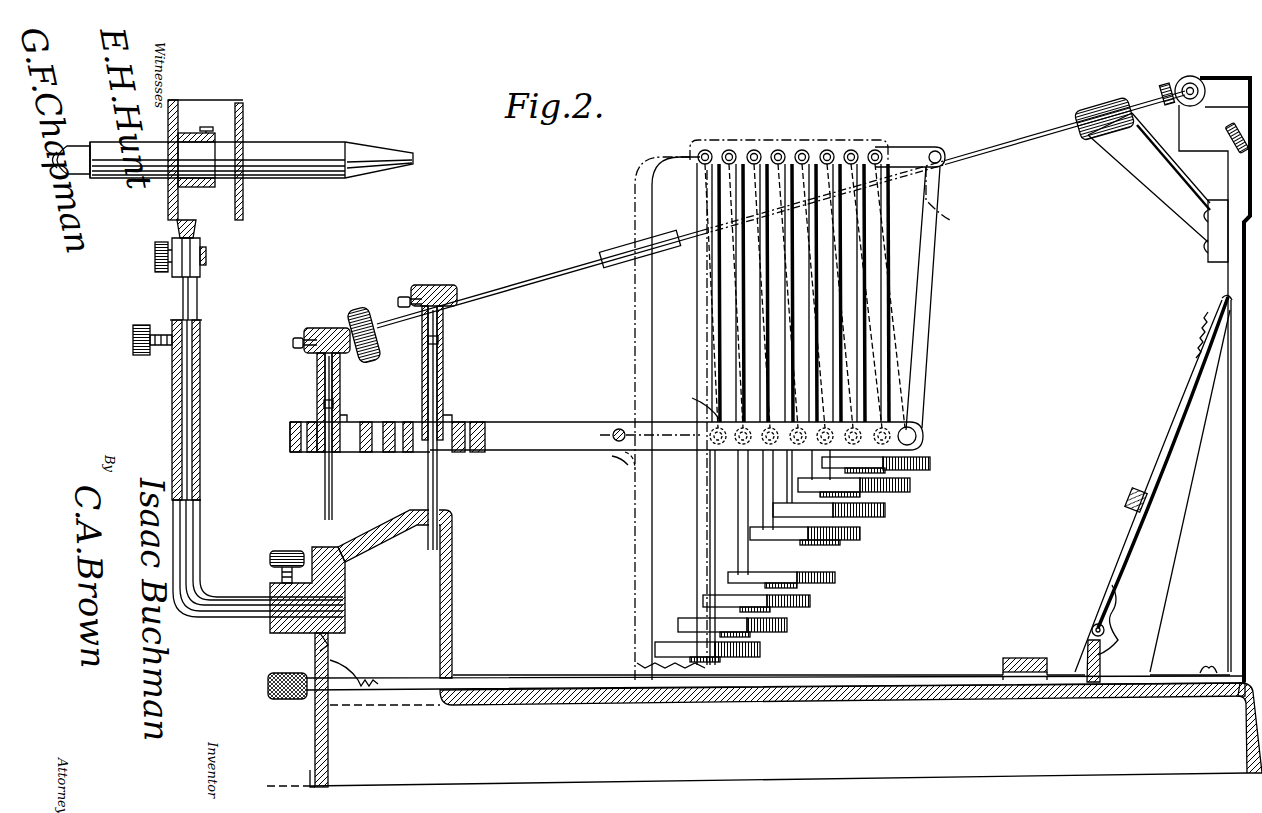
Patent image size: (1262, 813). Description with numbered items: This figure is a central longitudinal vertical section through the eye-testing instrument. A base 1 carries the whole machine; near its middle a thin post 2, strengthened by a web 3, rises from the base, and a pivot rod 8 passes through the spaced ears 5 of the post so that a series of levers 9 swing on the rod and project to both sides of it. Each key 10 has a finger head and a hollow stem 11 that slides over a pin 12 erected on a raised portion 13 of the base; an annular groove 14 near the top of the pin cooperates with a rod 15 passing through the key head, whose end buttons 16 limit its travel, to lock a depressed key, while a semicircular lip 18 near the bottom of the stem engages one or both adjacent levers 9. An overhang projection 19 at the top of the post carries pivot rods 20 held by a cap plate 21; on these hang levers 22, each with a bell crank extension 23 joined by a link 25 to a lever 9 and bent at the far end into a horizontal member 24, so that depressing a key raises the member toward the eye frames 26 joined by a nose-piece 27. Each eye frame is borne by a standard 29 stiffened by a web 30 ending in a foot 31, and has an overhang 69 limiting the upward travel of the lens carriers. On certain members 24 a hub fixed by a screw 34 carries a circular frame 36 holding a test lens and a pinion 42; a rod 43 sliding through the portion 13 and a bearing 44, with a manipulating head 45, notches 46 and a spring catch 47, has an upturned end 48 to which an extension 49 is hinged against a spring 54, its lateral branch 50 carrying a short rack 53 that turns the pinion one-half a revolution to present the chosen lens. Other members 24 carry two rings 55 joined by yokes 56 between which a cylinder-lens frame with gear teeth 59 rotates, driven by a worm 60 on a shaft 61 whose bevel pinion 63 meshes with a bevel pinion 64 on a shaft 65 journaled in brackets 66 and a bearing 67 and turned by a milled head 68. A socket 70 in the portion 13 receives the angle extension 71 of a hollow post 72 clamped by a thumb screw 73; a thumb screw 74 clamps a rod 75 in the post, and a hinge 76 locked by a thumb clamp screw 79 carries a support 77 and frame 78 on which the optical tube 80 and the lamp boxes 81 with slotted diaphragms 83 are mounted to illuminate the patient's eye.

The base 1 is at (640, 752).
The post 2 is at (634, 523).
The web 3 is at (662, 550).
The ears 5 is at (628, 468).
The rod 8 is at (618, 425).
The levers 9 is at (950, 432).
The key 10 is at (470, 256).
The hollow stem 11 is at (470, 355).
The pin 12 is at (468, 473).
The raised portion 13 is at (455, 600).
The annular groove 14 is at (470, 322).
The rod 15 is at (412, 262).
The button 16 is at (392, 355).
The lip 18 is at (452, 418).
The overhang projection 19 is at (850, 145).
The rods 20 is at (750, 145).
The cap plate 21 is at (800, 145).
The levers 22 is at (960, 195).
The bell crank extension 23 is at (910, 148).
The horizontal member 24 is at (785, 565).
The link 25 is at (935, 265).
The eye frames 26 is at (1248, 145).
The nose-piece 27 is at (1225, 128).
The standard 29 is at (1235, 287).
The web 30 is at (1215, 458).
The foot 31 is at (1172, 668).
The screw 34 is at (772, 608).
The circular frame 36 is at (838, 582).
The pinion 42 is at (718, 660).
The rod 43 is at (845, 680).
The bearing 44 is at (1018, 655).
The manipulating head 45 is at (282, 660).
The notches 46 is at (372, 682).
The spring catch 47 is at (345, 665).
The upturned end 48 is at (1085, 640).
The extension 49 is at (1123, 538).
The lateral branch 50 is at (1180, 390).
The rack 53 is at (1195, 328).
The spring 54 is at (1115, 620).
The rings 55 is at (800, 478).
The yokes 56 is at (870, 478).
The gear teeth 59 is at (780, 505).
The worm 60 is at (1205, 80).
The shaft 61 is at (1190, 82).
The bevel pinion 63 is at (1160, 98).
The bevel pinion 64 is at (1165, 87).
The shaft 65 is at (990, 148).
The brackets 66 is at (1170, 200).
The bearing 67 is at (612, 245).
The milled manipulating head 68 is at (364, 318).
The overhangs 69 is at (1197, 140).
The horizontal socket 70 is at (270, 590).
The angle extension 71 is at (232, 616).
The hollow post 72 is at (198, 492).
The thumb screw 73 is at (285, 548).
The thumb screw 74 is at (132, 345).
The rod 75 is at (196, 318).
The hinge 76 is at (206, 258).
The support 77 is at (176, 235).
The frame 78 is at (170, 200).
The thumb clamp screw 79 is at (154, 256).
The optical tube 80 is at (290, 148).
The boxes 81 is at (235, 105).
The diaphragm 83 is at (245, 200).